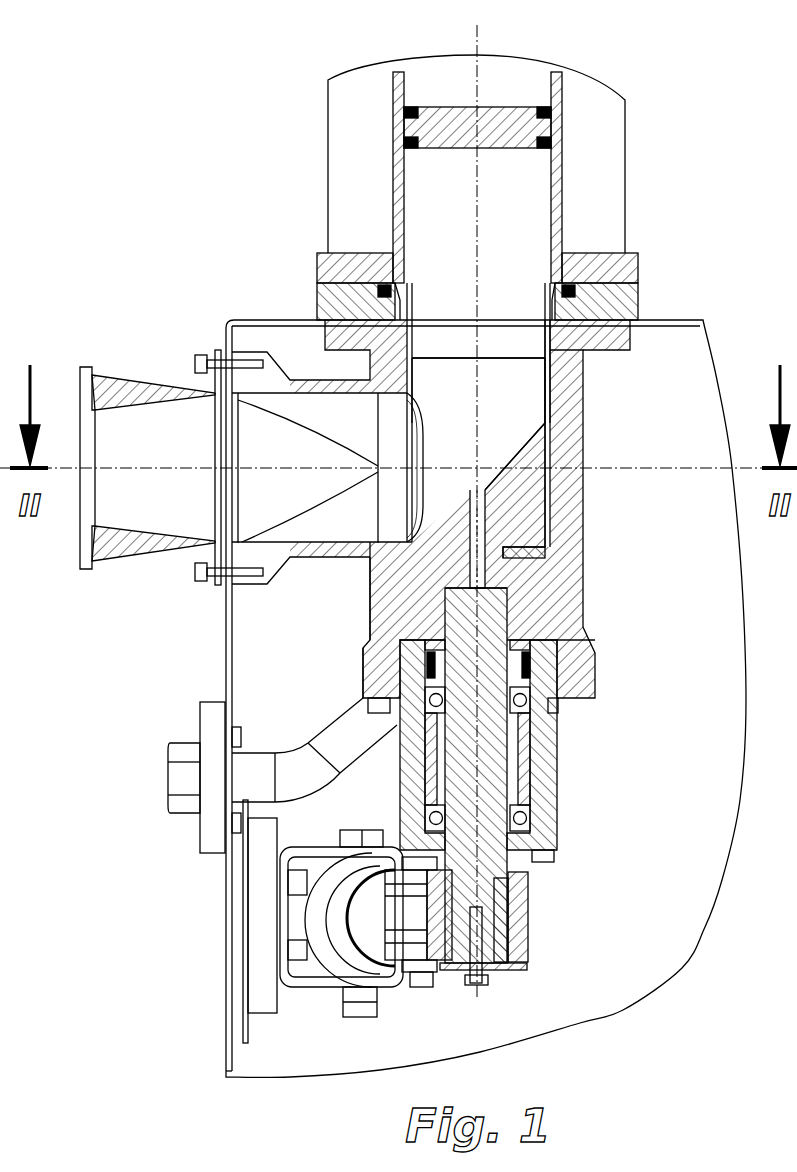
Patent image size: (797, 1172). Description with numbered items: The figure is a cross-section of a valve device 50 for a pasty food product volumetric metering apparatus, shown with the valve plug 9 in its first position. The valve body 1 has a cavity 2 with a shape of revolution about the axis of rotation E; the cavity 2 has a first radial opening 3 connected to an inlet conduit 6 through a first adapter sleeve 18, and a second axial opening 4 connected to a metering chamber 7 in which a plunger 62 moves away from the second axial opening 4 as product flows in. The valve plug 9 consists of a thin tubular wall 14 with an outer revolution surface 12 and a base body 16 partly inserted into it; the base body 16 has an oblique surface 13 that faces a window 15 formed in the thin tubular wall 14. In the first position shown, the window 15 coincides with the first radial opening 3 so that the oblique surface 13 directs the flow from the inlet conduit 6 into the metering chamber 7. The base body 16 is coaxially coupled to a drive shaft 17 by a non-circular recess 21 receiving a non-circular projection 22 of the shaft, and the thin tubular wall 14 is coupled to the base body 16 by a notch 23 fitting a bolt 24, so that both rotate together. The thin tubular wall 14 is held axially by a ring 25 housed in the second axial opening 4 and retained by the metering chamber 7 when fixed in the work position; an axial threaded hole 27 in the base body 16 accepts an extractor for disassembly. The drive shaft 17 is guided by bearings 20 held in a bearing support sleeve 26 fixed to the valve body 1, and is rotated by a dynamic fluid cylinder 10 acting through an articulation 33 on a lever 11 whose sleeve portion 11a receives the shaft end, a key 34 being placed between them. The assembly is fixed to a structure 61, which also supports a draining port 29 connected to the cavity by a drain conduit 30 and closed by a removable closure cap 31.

The valve body 1 is at (596, 459).
The cavity 2 is at (438, 398).
The first radial opening 3 is at (388, 507).
The second axial opening 4 is at (465, 345).
The inlet conduit 6 is at (133, 387).
The metering chamber 7 is at (393, 175).
The valve plug 9 is at (497, 378).
The dynamic fluid cylinder 10 is at (330, 937).
The lever 11 is at (397, 953).
The sleeve portion 11a is at (525, 913).
The outer revolution surface 12 is at (556, 438).
The oblique surface 13 is at (443, 503).
The thin tubular wall 14 is at (552, 400).
The window 15 is at (383, 430).
The base body 16 is at (533, 487).
The drive shaft 17 is at (493, 745).
The first adapter sleeve 18 is at (293, 557).
The bearings 20 is at (532, 702).
The non-circular recess 21 is at (510, 610).
The non-circular projection 22 is at (363, 656).
The notch 23 is at (552, 537).
The bolt 24 is at (520, 565).
The ring 25 is at (598, 325).
The bearing support sleeve 26 is at (548, 788).
The axial threaded hole 27 is at (398, 600).
The draining port 29 is at (205, 827).
The drain conduit 30 is at (333, 725).
The removable closure cap 31 is at (175, 776).
The articulation 33 is at (421, 974).
The key 34 is at (508, 935).
The valve device 50 is at (268, 246).
The structure 61 is at (224, 682).
The plunger 62 is at (448, 107).
The axis of rotation E is at (482, 78).